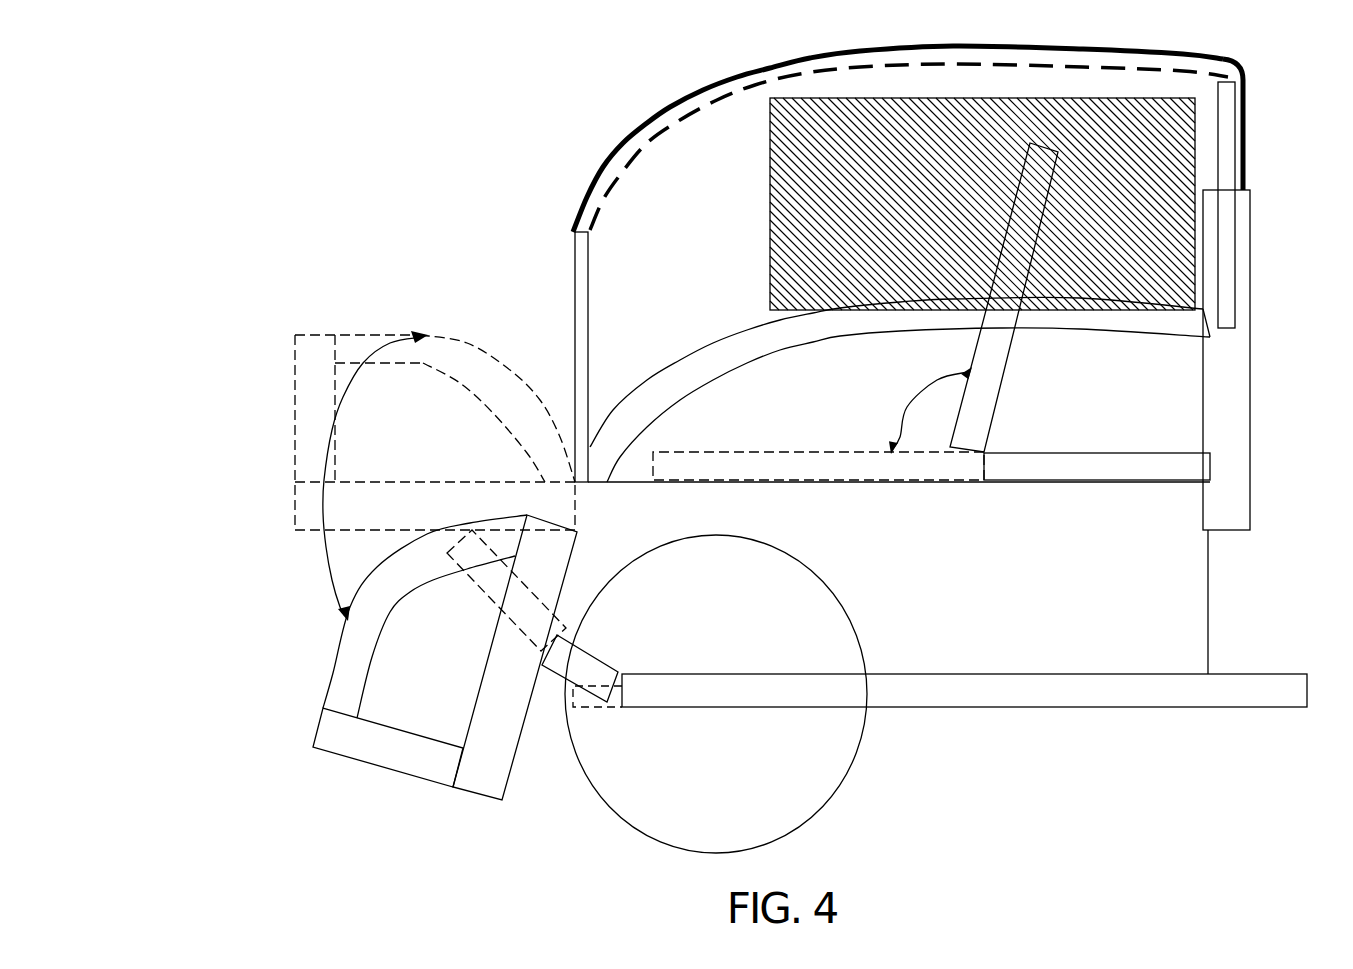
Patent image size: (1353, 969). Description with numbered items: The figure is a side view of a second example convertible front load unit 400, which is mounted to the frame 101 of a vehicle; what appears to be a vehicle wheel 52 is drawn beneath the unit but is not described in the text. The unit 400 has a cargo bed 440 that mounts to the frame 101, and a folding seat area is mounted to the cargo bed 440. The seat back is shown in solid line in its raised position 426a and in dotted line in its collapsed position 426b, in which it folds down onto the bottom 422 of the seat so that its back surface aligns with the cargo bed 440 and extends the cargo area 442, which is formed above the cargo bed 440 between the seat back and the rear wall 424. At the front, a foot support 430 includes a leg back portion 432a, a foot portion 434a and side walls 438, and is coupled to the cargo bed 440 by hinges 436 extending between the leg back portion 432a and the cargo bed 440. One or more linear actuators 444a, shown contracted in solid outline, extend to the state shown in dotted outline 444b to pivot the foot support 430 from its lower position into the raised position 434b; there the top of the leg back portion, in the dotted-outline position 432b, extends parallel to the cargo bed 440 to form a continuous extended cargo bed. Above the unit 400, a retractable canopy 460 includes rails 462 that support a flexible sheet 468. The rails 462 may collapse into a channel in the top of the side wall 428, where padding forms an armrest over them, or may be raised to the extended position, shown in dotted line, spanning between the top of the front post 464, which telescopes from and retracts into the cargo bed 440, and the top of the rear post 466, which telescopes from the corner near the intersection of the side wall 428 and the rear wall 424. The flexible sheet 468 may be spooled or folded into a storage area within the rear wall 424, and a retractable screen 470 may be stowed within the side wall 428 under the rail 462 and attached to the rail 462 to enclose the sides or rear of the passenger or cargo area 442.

The convertible front load unit 400 is at (292, 184).
The flexible sheet 468 is at (907, 46).
The rear post 466 is at (1246, 117).
The rails 462 is at (785, 82).
The retractable canopy 460 is at (658, 90).
The front post 464 is at (574, 248).
The retractable screen 470 is at (769, 237).
The side wall 428 is at (710, 343).
The hinges 436 is at (575, 482).
The raised position of foot support 434b is at (295, 392).
The leg back portion in raised position 432b is at (415, 482).
The raised position of seat back 426a is at (968, 365).
The collapsed position of seat back 426b is at (770, 452).
The cargo area 442 is at (1122, 384).
The rear wall 424 is at (1250, 423).
The bottom of the seat 422 is at (870, 486).
The cargo bed 440 is at (1040, 483).
The foot support 430 is at (216, 636).
The side walls of foot support 438 is at (338, 680).
The extended state of linear actuator 444b is at (468, 583).
The leg back portion 432a is at (478, 693).
The foot portion 434a is at (342, 752).
The linear actuators 444a is at (555, 667).
The wheel 52 is at (640, 802).
The frame 101 is at (970, 703).